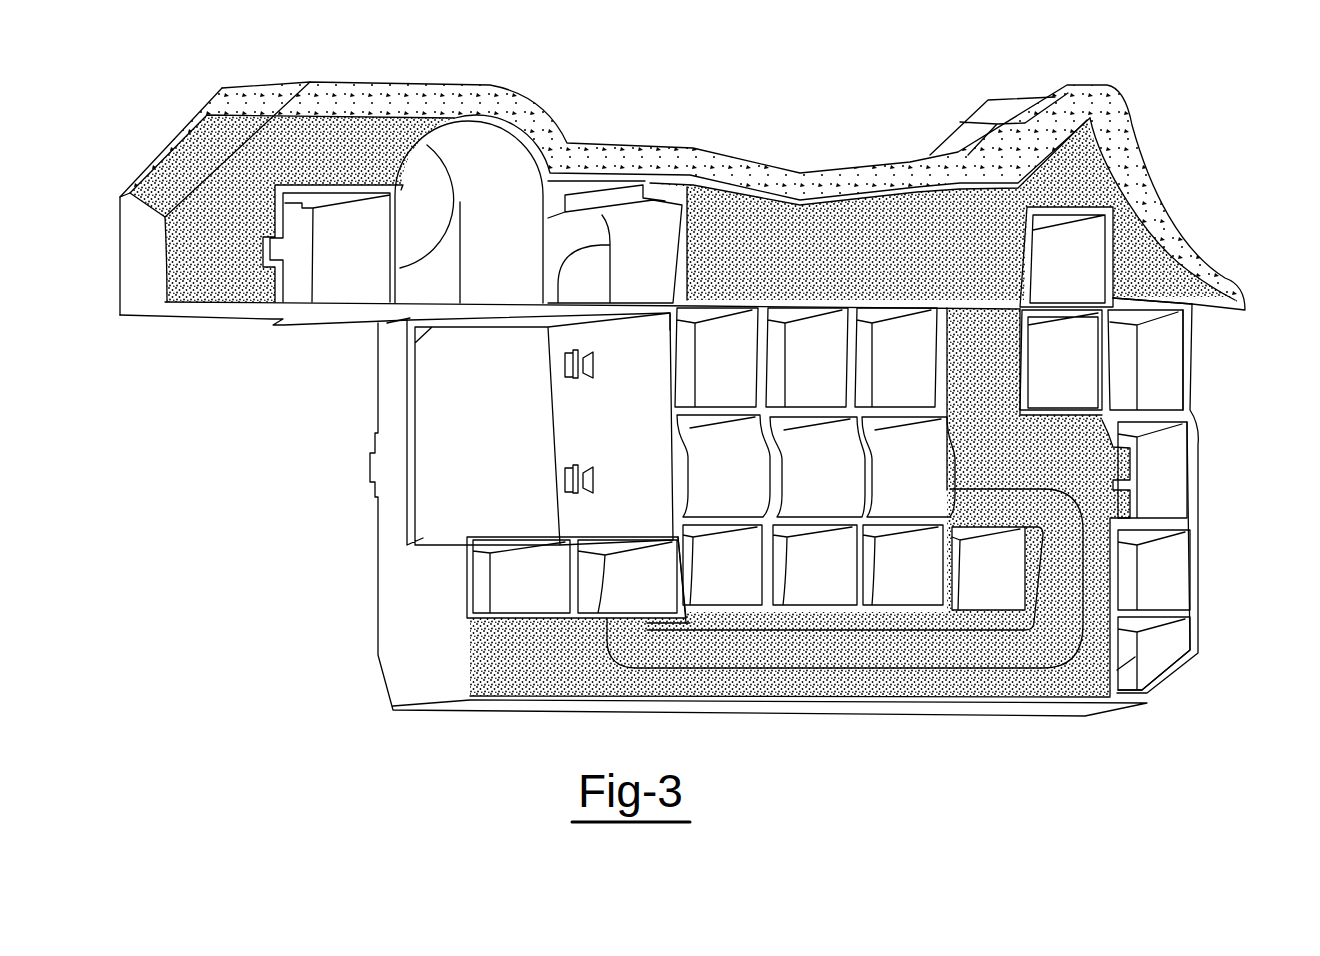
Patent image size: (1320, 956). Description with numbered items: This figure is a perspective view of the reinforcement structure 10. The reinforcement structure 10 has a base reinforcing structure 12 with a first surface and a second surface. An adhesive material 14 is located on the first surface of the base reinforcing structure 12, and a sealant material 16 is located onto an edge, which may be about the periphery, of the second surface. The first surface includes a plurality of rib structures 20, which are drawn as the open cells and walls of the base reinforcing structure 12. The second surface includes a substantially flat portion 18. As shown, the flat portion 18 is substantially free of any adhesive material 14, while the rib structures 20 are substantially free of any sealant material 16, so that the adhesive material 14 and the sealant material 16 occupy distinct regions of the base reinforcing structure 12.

The reinforcement structure 10 is at (1032, 771).
The base reinforcing structure 12 is at (628, 439).
The adhesive material 14 is at (1150, 283).
The sealant material 16 is at (542, 128).
The flat portion 18 is at (990, 142).
The rib structures 20 is at (573, 583).